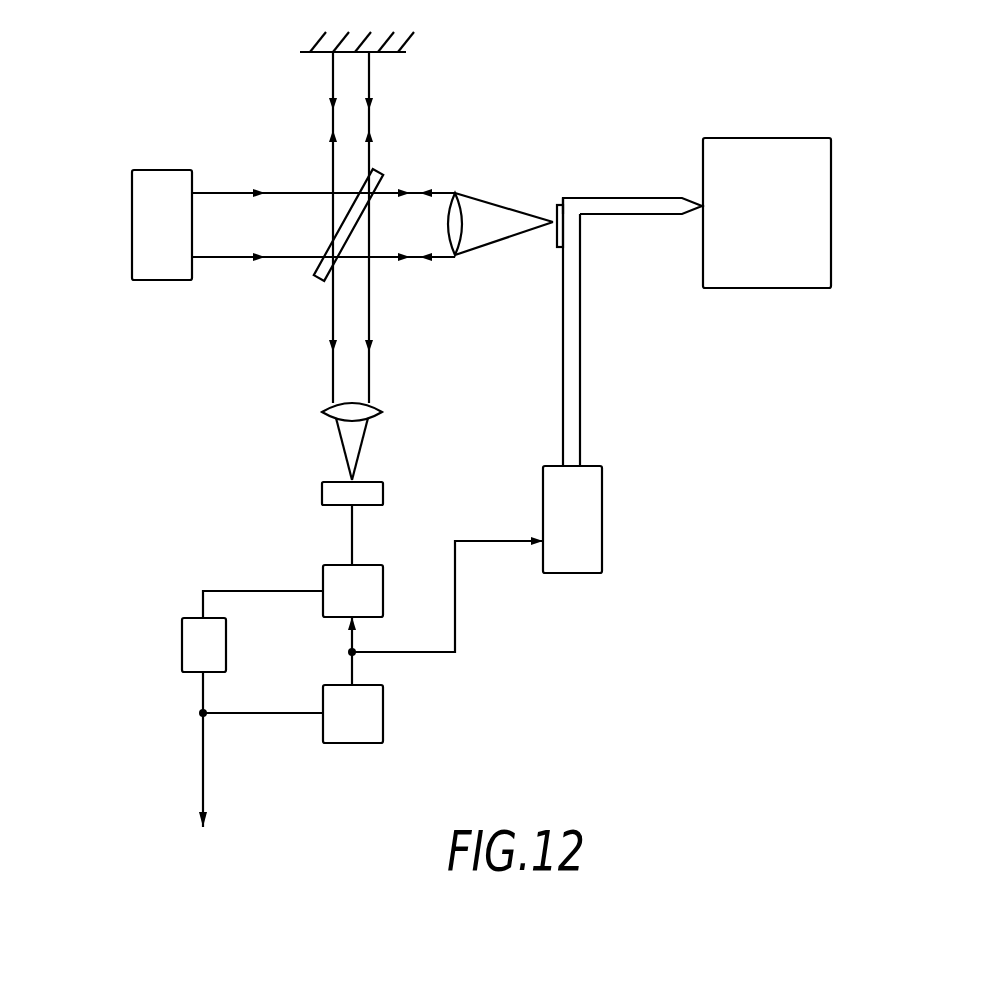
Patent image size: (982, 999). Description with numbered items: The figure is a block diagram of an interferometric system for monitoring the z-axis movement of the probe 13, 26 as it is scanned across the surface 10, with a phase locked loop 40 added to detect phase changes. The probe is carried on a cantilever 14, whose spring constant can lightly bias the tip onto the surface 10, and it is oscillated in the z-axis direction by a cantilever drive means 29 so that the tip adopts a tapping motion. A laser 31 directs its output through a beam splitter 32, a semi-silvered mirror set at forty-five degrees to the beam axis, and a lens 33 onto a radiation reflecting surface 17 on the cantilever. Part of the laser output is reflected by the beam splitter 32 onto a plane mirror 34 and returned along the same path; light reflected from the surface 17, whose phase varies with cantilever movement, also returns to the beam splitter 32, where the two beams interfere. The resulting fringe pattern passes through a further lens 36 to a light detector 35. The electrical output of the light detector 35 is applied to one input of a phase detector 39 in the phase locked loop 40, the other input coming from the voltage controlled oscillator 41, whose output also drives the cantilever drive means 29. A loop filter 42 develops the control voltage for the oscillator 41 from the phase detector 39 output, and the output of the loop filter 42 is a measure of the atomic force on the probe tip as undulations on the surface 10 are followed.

The surface 10 is at (798, 257).
The probe 13 is at (628, 179).
The probe 26 is at (600, 200).
The cantilever 14 is at (572, 365).
The radiation reflecting surface 17 is at (553, 228).
The cantilever drive means 29 is at (578, 529).
The laser 31 is at (160, 245).
The beam splitter 32 is at (318, 278).
The lens 33 is at (455, 193).
The plane mirror 34 is at (390, 52).
The light detector 35 is at (370, 495).
The further lens 36 is at (375, 405).
The phase detector 39 is at (367, 600).
The phase locked loop 40 is at (305, 669).
The voltage controlled oscillator 41 is at (360, 723).
The loop filter 42 is at (190, 647).